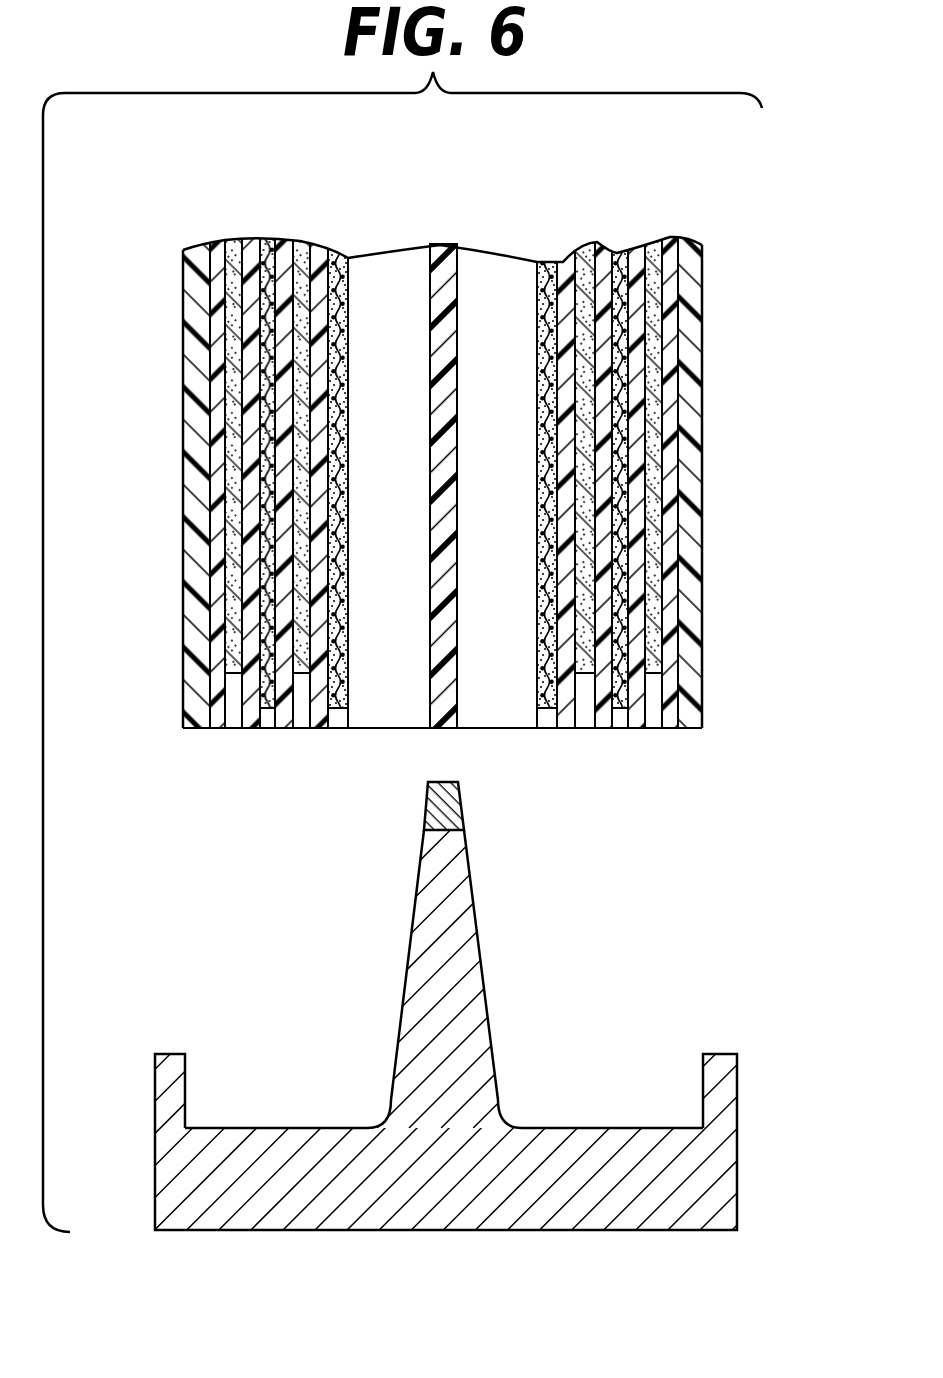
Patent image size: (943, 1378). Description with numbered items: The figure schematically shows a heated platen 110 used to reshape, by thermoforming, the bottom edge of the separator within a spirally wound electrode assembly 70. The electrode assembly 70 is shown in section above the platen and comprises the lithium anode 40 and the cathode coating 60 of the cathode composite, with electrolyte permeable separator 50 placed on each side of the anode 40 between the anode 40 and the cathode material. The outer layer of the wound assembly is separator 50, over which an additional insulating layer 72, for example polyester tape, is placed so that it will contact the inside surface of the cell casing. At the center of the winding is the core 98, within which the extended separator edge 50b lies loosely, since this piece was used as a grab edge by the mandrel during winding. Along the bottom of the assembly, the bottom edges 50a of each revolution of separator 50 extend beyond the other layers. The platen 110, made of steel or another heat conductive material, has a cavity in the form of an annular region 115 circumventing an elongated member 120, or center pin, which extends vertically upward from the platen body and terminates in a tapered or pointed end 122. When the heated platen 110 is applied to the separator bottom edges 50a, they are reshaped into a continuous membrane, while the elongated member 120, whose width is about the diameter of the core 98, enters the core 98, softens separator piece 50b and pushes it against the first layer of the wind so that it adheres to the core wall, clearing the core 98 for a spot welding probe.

The anode 40 is at (300, 240).
The separator 50 is at (283, 241).
The separator bottom edge 50a is at (218, 730).
The extended separator edge 50b is at (457, 280).
The cathode coating 60 is at (337, 242).
The spiral wound electrode assembly 70 is at (703, 672).
The insulating layer 72 is at (198, 357).
The core 98 is at (405, 265).
The heated platen 110 is at (737, 1165).
The annular region 115 is at (278, 1127).
The elongated member 120 is at (480, 958).
The tapered or pointed end 122 is at (425, 813).